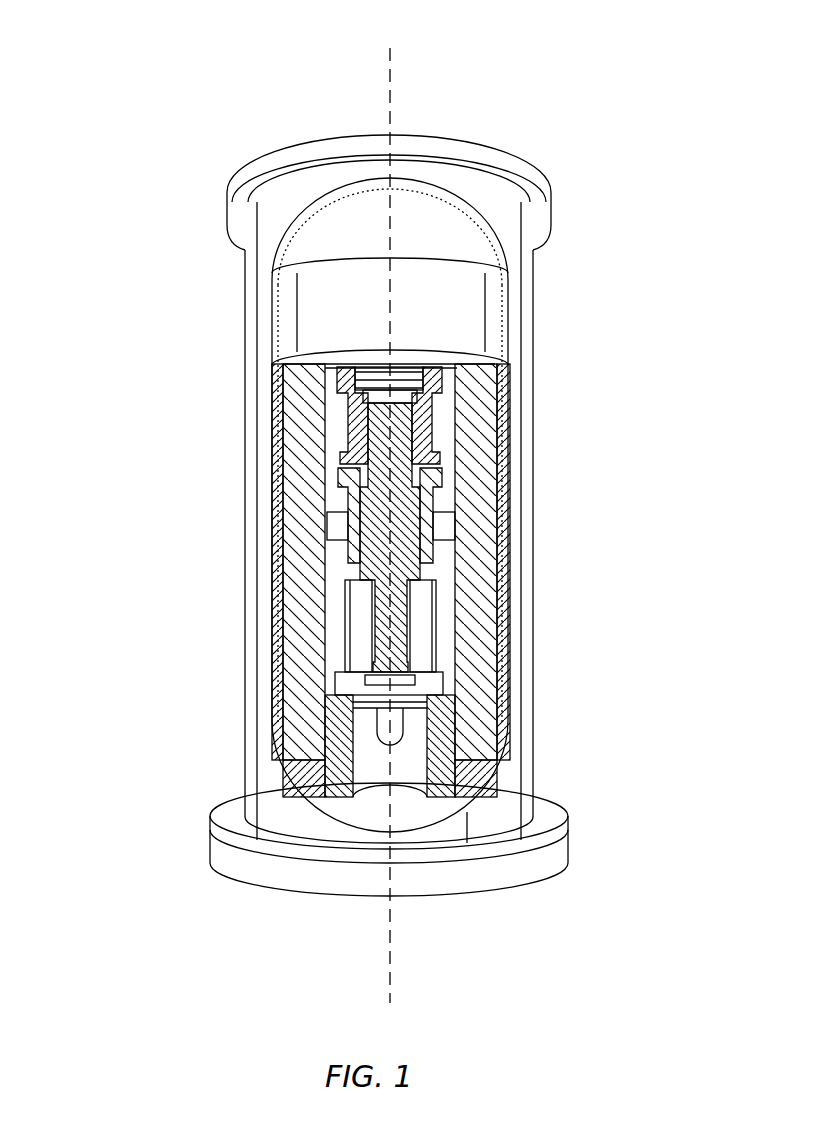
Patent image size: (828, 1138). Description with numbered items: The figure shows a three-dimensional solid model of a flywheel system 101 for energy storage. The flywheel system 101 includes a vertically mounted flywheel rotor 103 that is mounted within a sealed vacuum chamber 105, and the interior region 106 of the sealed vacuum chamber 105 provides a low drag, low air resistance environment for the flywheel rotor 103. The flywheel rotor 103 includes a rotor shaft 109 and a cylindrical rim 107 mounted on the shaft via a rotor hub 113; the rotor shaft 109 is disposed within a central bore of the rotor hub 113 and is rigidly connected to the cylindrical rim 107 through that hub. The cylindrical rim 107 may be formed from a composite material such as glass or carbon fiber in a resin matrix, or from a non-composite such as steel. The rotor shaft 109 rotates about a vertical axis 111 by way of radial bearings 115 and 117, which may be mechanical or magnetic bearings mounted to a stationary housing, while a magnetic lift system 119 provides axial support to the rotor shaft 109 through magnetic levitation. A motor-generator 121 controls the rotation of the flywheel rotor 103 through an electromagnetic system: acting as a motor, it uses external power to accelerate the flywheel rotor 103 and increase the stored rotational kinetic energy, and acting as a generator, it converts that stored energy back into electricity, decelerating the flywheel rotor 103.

The flywheel system 101 is at (138, 128).
The flywheel rotor 103 is at (460, 250).
The sealed vacuum chamber 105 is at (258, 310).
The interior region 106 is at (300, 252).
The cylindrical rim 107 is at (492, 320).
The rotor shaft 109 is at (402, 530).
The vertical axis 111 is at (390, 57).
The rotor hub 113 is at (338, 525).
The radial bearing 115 is at (425, 703).
The radial bearing 117 is at (362, 382).
The magnetic lift system 119 is at (413, 460).
The motor-generator 121 is at (343, 625).